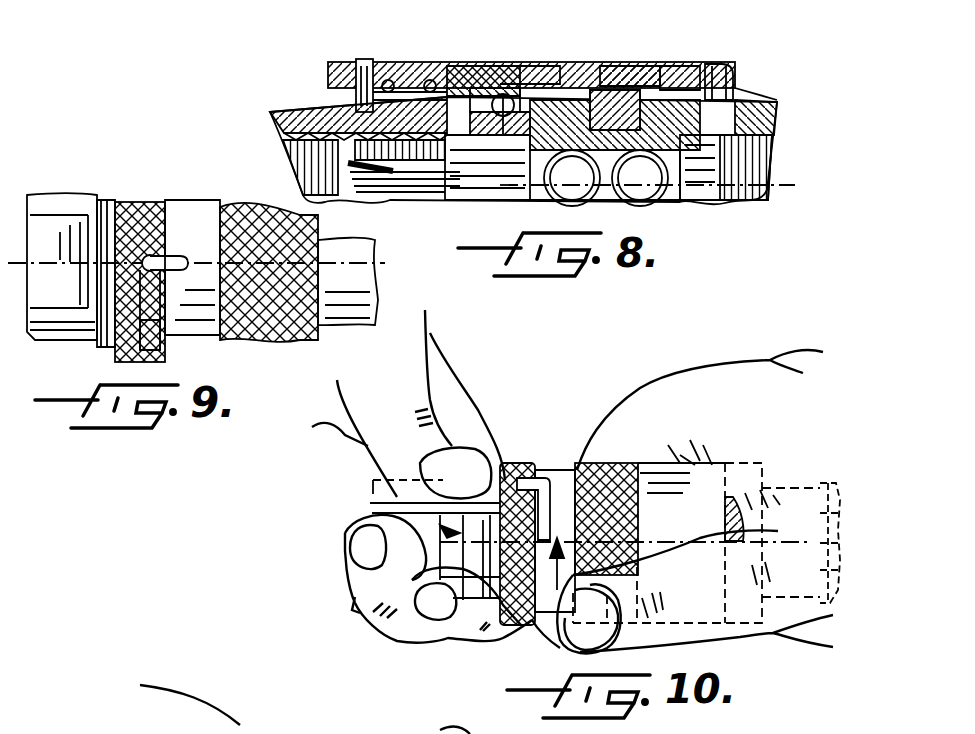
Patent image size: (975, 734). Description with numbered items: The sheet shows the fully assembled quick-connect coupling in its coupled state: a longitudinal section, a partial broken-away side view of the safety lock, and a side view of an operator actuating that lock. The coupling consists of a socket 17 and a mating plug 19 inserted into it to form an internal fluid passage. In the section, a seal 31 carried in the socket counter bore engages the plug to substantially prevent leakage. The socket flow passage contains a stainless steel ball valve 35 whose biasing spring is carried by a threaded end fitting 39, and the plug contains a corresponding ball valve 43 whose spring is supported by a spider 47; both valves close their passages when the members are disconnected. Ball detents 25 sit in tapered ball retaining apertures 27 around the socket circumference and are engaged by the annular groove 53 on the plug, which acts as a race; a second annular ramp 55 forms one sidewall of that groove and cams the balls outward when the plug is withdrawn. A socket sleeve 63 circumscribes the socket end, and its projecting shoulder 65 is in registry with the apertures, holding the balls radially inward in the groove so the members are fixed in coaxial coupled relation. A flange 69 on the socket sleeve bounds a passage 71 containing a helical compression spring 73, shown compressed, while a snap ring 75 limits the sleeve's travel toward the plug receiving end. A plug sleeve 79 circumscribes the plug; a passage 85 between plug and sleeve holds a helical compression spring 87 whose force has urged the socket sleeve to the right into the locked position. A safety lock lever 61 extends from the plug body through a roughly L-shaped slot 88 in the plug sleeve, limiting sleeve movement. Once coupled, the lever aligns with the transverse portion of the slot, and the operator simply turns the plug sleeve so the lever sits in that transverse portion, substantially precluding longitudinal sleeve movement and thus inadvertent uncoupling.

In FIG. 8, the socket 17 is at (790, 102).
In FIG. 10, the socket 17 is at (697, 492).
In FIG. 8, the mating plug 19 is at (314, 100).
In FIG. 9, the mating plug 19 is at (85, 195).
In FIG. 10, the mating plug 19 is at (396, 498).
In FIG. 8, the ball detents 25 is at (582, 80).
In FIG. 8, the ball retaining apertures 27 is at (504, 88).
In FIG. 8, the seal 31 is at (615, 120).
In FIG. 8, the ball valve 35 is at (647, 178).
In FIG. 8, the threaded end fitting 39 is at (705, 180).
In FIG. 8, the ball valve 43 is at (605, 178).
In FIG. 8, the spider 47 is at (400, 188).
In FIG. 8, the annular groove 53 is at (470, 188).
In FIG. 8, the second annular ramp 55 is at (527, 188).
In FIG. 8, the safety lock lever 61 is at (362, 59).
In FIG. 9, the safety lock lever 61 is at (152, 205).
In FIG. 10, the safety lock lever 61 is at (534, 546).
In FIG. 8, the socket sleeve 63 is at (570, 63).
In FIG. 9, the socket sleeve 63 is at (336, 312).
In FIG. 10, the socket sleeve 63 is at (668, 466).
In FIG. 8, the projecting shoulder 65 is at (544, 66).
In FIG. 8, the flange 69 is at (722, 88).
In FIG. 8, the passage 71 is at (620, 70).
In FIG. 8, the helical compression spring 73 is at (650, 72).
In FIG. 8, the snap ring 75 is at (746, 100).
In FIG. 8, the plug sleeve 79 is at (478, 66).
In FIG. 9, the plug sleeve 79 is at (220, 205).
In FIG. 10, the plug sleeve 79 is at (574, 468).
In FIG. 8, the passage 85 is at (431, 79).
In FIG. 8, the helical compression spring 87 is at (389, 79).
In FIG. 9, the slot 88 is at (148, 320).
In FIG. 10, the slot 88 is at (535, 463).